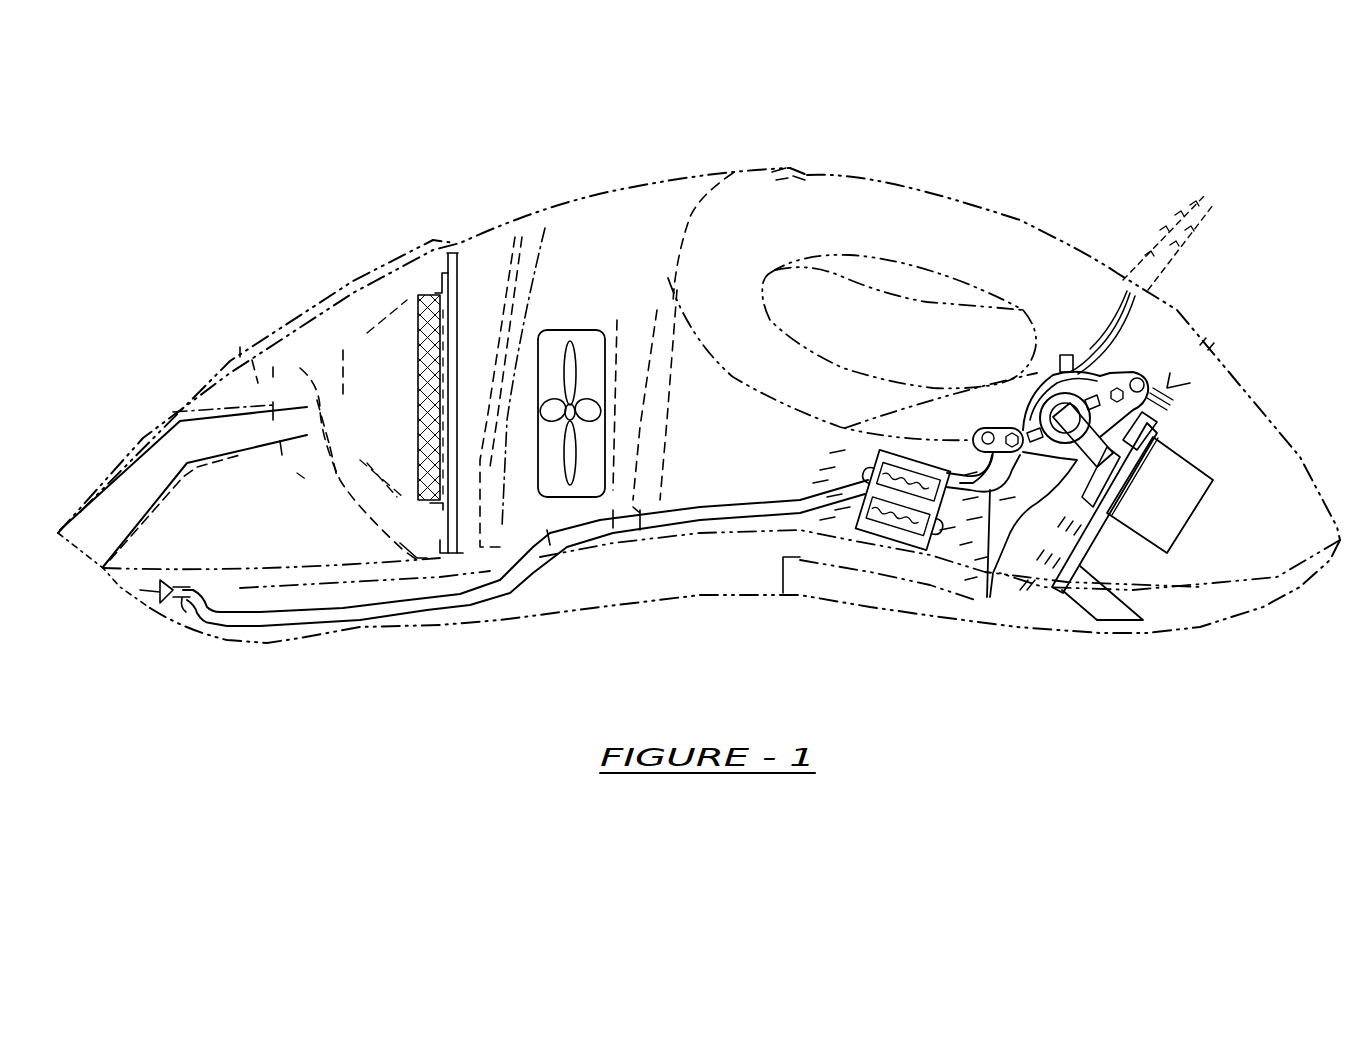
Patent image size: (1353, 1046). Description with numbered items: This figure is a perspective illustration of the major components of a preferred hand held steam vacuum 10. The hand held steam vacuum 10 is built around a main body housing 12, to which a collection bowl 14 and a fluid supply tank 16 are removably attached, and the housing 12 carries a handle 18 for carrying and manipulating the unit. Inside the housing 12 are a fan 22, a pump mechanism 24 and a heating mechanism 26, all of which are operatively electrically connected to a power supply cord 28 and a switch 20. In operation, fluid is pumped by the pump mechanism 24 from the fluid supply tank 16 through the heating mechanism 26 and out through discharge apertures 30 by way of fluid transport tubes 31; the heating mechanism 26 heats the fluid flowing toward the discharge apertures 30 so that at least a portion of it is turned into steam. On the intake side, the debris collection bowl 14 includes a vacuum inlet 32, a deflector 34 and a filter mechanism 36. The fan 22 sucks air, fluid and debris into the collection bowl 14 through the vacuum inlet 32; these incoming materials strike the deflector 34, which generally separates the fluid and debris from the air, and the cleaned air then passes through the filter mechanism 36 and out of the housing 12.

The hand held steam vacuum 10 is at (262, 232).
The main body housing 12 is at (280, 633).
The collection bowl 14 is at (353, 290).
The fluid supply tank 16 is at (1247, 390).
The handle 18 is at (930, 232).
The switch 20 is at (797, 163).
The fan 22 is at (593, 350).
The pump mechanism 24 is at (1110, 377).
The heating mechanism 26 is at (887, 537).
The power supply cord 28 is at (1137, 270).
The discharge apertures 30 is at (140, 597).
The fluid transport tubes 31 is at (430, 602).
The vacuum inlet 32 is at (130, 493).
The deflector 34 is at (262, 372).
The filter mechanism 36 is at (437, 340).